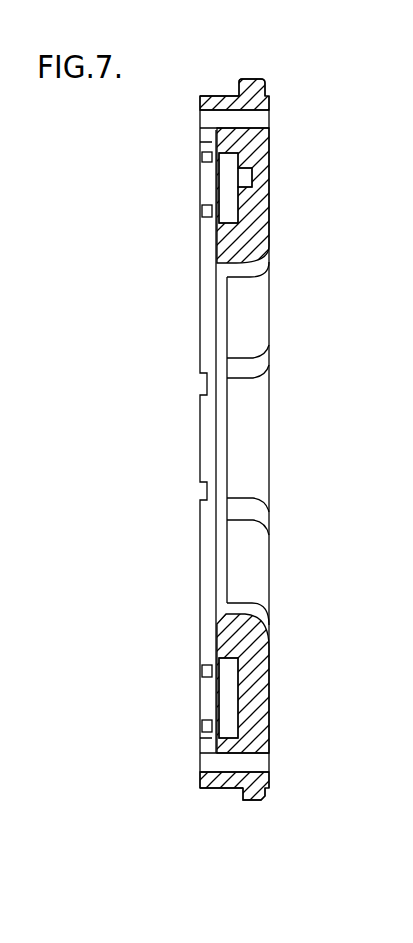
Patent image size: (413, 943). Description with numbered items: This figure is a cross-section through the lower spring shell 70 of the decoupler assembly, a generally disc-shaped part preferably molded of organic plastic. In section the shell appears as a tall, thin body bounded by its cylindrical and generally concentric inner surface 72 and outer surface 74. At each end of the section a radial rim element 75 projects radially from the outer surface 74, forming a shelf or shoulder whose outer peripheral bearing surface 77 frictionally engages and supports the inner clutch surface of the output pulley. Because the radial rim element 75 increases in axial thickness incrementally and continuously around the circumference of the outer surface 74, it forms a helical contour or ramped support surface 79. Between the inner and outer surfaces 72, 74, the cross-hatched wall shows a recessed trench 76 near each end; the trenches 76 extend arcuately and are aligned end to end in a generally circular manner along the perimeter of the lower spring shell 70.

The lower spring shell 70 is at (273, 204).
The inner surface 72 is at (224, 622).
The outer surface 74 is at (200, 788).
The radial rim element 75 is at (270, 96).
The trench 76 is at (241, 203).
The outer peripheral bearing surface 77 is at (243, 81).
The ramped support surface 79 is at (200, 96).